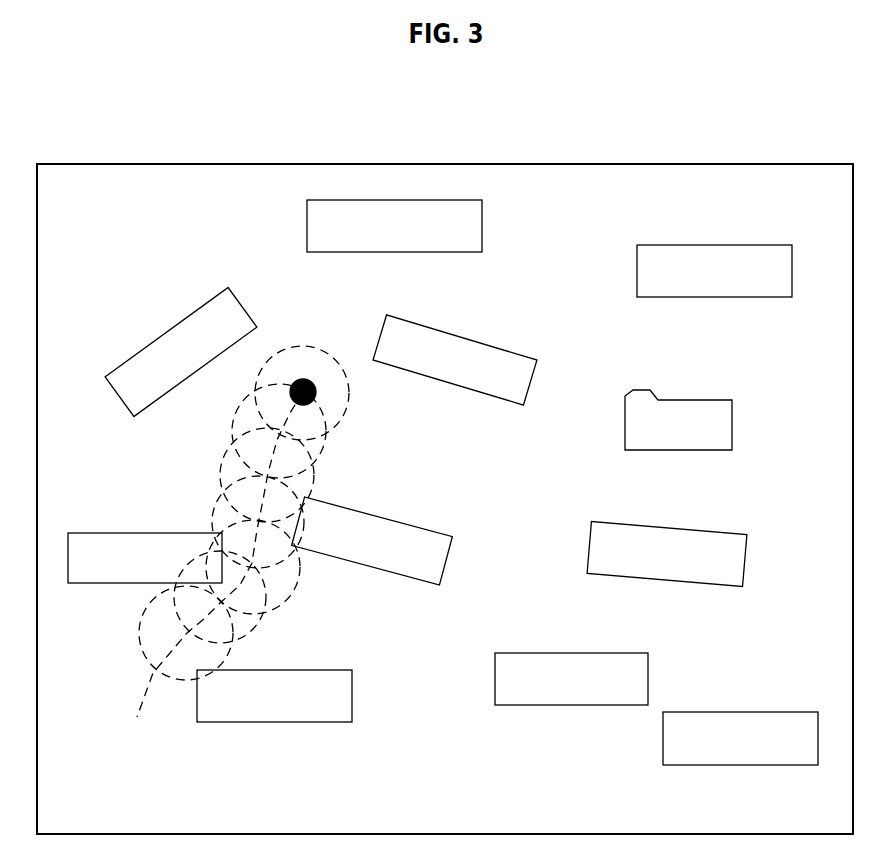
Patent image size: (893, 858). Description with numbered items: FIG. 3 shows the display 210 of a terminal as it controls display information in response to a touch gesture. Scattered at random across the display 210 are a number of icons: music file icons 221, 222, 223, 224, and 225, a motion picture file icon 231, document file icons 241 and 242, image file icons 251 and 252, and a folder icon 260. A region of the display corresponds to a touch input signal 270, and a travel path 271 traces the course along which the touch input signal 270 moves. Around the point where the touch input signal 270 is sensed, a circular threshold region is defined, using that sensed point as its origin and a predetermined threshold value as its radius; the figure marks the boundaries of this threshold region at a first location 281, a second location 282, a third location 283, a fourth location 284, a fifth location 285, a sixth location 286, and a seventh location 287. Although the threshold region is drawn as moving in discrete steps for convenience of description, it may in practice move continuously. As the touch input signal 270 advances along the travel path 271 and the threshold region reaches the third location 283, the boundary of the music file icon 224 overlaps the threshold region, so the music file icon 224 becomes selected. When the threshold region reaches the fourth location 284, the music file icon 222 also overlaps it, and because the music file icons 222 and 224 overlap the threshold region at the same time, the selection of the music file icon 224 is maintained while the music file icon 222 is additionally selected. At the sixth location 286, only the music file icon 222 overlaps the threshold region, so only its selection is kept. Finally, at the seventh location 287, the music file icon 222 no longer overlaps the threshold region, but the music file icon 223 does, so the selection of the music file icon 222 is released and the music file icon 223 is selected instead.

The display 210 is at (443, 164).
The music file icon 221 is at (165, 333).
The music file icon 222 is at (93, 583).
The music file icon 223 is at (270, 722).
The music file icon 224 is at (412, 525).
The music file icon 225 is at (490, 397).
The motion picture file icon 231 is at (482, 224).
The document file icon 241 is at (570, 705).
The document file icon 242 is at (712, 297).
The image file icon 251 is at (660, 587).
The image file icon 252 is at (738, 765).
The folder icon 260 is at (732, 425).
The touch input signal 270 is at (303, 380).
The travel path 271 is at (143, 693).
The first location 281 is at (348, 406).
The second location 282 is at (234, 417).
The third location 283 is at (316, 472).
The fourth location 284 is at (216, 503).
The fifth location 285 is at (298, 577).
The sixth location 286 is at (258, 631).
The seventh location 287 is at (165, 681).